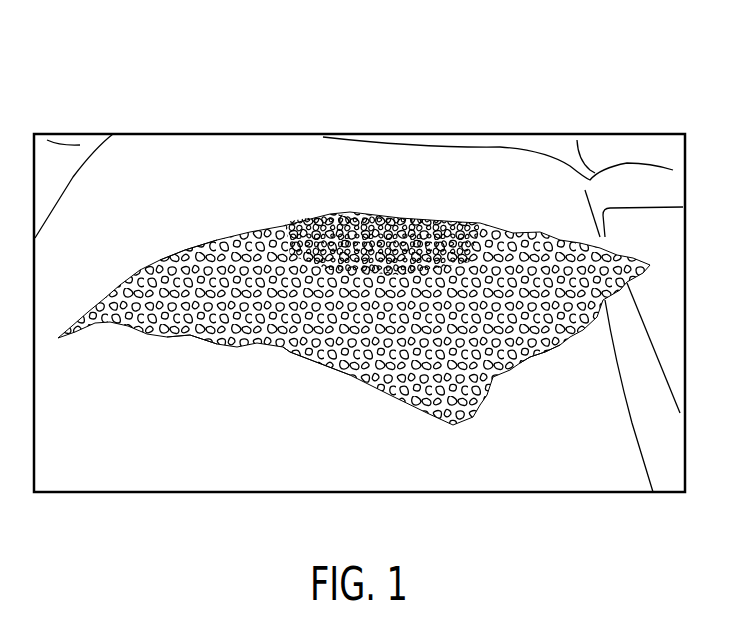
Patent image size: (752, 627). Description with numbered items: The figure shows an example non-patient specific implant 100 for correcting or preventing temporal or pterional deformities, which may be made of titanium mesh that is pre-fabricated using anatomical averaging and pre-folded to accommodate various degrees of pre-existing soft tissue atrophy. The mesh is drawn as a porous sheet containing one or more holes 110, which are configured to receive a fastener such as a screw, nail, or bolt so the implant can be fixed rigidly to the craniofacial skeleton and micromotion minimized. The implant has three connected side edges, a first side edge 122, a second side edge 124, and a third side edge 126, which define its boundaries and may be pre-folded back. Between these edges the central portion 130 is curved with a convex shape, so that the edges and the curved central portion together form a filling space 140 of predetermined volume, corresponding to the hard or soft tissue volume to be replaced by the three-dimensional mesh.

The non-patient specific implant 100 is at (646, 102).
The holes 110 is at (493, 377).
The first side edge 122 is at (520, 363).
The second side edge 124 is at (193, 338).
The third side edge 126 is at (195, 243).
The central portion 130 is at (383, 226).
The filling space 140 is at (289, 362).